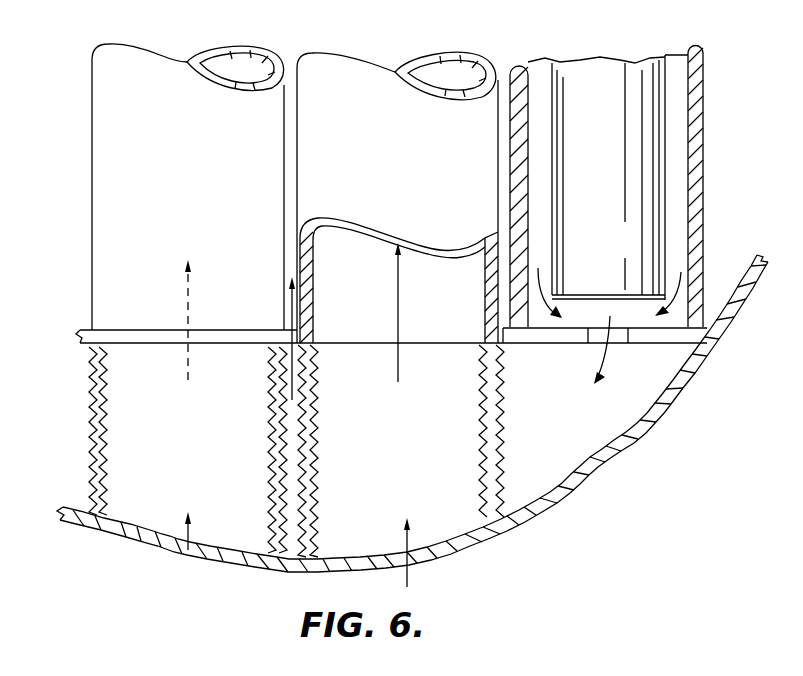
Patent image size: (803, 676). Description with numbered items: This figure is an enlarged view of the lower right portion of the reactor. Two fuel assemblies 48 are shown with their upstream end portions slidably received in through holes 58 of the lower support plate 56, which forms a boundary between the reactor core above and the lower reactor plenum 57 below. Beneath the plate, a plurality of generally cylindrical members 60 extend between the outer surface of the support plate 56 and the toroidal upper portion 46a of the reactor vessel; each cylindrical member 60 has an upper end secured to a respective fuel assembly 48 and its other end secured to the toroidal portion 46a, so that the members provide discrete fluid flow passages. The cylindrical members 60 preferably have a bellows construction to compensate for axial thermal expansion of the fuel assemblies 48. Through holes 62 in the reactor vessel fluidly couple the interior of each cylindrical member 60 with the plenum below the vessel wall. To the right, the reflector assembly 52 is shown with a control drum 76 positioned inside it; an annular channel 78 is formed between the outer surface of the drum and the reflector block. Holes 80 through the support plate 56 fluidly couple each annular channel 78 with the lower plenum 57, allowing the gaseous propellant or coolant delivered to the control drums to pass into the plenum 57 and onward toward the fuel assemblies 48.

The fuel assemblies 48 is at (203, 164).
The lower support plate 56 is at (118, 332).
The through holes 58 is at (435, 331).
The cylindrical members 60 is at (92, 408).
The through holes 62 is at (193, 543).
The lower reactor plenum 57 is at (575, 461).
The upper portion of reactor vessel 46a is at (637, 432).
The holes 80 is at (618, 343).
The control drum 76 is at (623, 253).
The annular channel 78 is at (673, 75).
The reflector assembly 52 is at (708, 117).